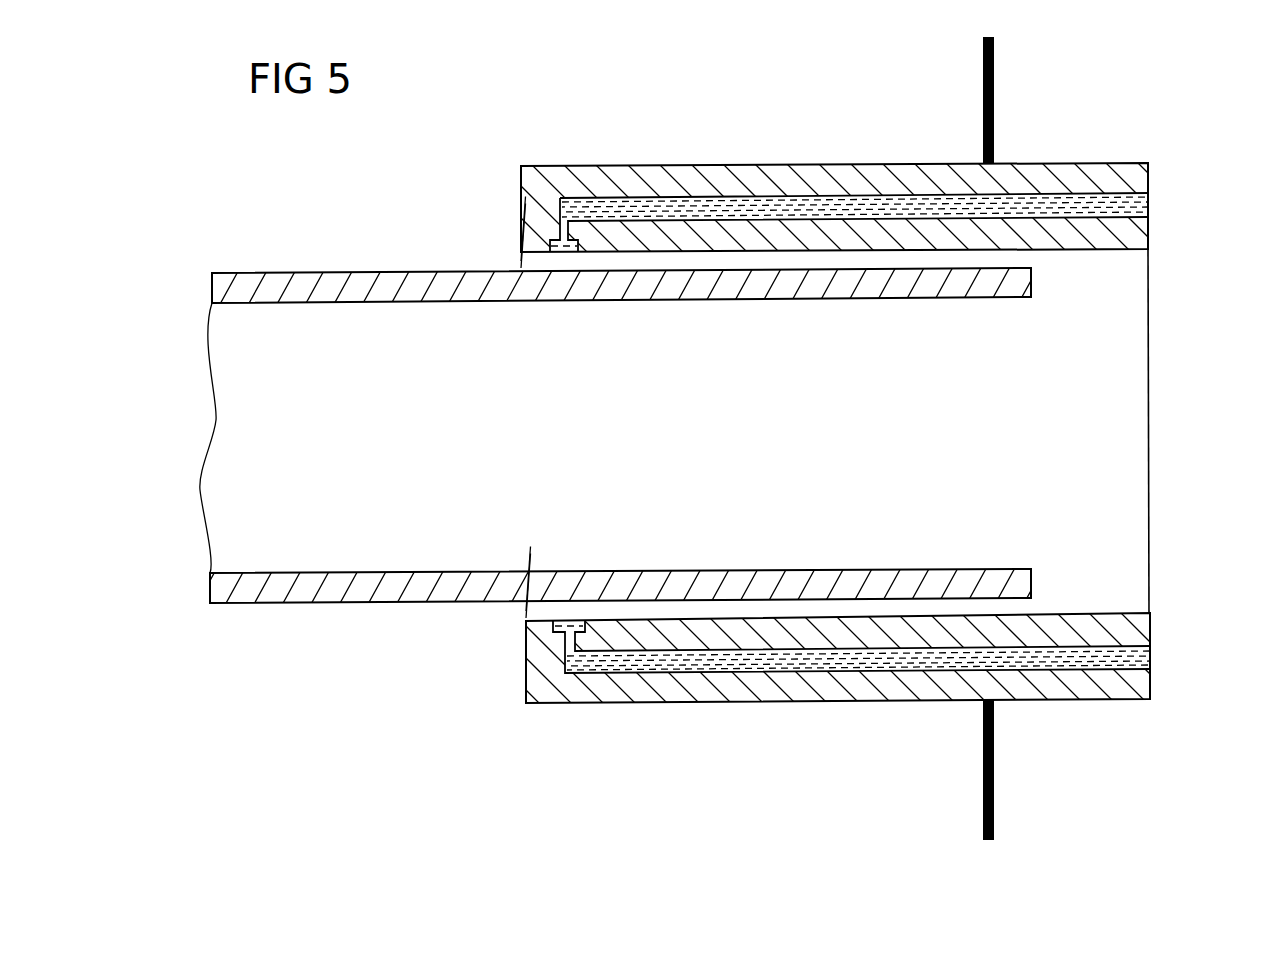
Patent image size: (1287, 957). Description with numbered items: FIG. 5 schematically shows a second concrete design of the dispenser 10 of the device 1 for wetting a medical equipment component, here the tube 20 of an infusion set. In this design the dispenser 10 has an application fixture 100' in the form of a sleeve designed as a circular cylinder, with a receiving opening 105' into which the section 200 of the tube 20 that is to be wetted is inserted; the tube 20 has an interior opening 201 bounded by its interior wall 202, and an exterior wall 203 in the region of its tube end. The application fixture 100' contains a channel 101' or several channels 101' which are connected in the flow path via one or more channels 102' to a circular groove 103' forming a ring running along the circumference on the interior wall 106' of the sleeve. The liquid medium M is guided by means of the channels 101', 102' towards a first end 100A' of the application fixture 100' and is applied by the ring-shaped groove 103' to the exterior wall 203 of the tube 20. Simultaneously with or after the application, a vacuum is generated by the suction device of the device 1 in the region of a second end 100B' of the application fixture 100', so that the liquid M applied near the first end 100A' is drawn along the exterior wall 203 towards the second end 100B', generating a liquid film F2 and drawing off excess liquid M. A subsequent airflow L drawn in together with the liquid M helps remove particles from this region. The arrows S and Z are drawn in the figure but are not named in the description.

The device 1 is at (1220, 762).
The dispenser 10 is at (718, 131).
The tube 20 is at (327, 592).
The section 200 is at (908, 280).
The interior opening 201 is at (1004, 429).
The interior wall 202 is at (482, 572).
The exterior wall 203 is at (300, 272).
The first end 100A' is at (846, 186).
The second end 100B' is at (1217, 431).
The application fixture 100' is at (829, 684).
The channel 101' is at (851, 699).
The channel 102' is at (514, 677).
The circular groove 103' is at (503, 660).
The receiving opening 105' is at (443, 202).
The interior wall 106' is at (916, 680).
The liquid film F2 is at (757, 267).
The airflow L is at (489, 253).
The liquid medium M is at (1065, 198).
The flow direction S is at (1098, 281).
The supply direction Z is at (1182, 200).